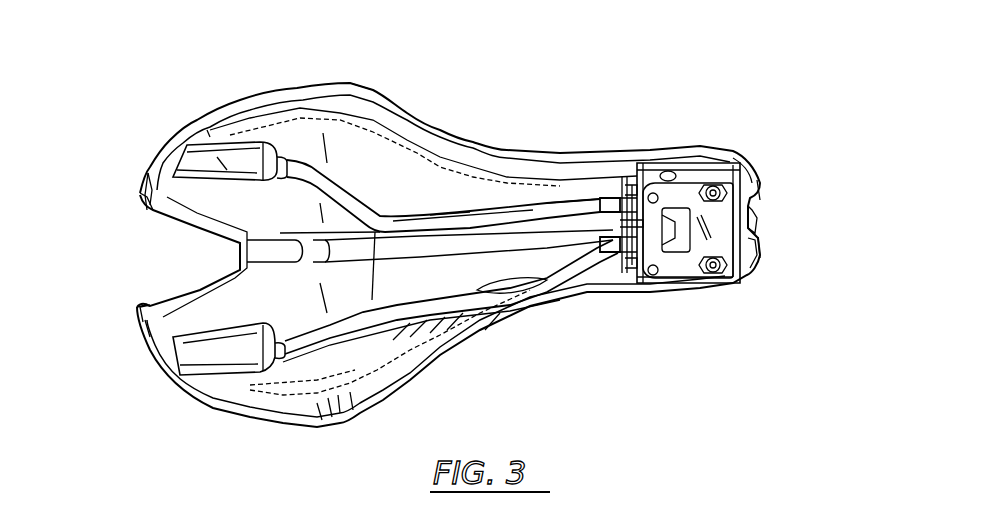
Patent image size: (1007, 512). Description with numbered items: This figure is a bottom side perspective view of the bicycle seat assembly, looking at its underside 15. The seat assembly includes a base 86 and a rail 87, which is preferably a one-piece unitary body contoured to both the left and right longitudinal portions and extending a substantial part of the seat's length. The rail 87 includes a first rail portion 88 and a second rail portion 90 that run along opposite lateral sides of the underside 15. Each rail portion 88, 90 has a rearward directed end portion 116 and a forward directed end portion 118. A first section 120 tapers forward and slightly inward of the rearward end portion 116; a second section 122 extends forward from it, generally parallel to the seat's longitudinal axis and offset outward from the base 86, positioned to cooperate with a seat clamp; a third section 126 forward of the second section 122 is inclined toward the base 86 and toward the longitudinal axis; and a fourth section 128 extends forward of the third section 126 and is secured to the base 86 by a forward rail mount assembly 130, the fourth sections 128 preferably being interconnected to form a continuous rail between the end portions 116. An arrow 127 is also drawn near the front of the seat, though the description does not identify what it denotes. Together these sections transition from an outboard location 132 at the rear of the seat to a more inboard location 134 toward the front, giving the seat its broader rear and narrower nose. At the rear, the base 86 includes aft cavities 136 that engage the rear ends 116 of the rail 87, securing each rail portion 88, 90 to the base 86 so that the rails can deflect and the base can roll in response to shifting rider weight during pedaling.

The underside 15 is at (727, 300).
The base 86 is at (393, 143).
The rail 87 is at (320, 163).
The first rail portion 88 is at (477, 310).
The second rail portion 90 is at (470, 187).
The rearward directed end portion 116 is at (283, 173).
The forward directed end portion 118 is at (613, 205).
The first section 120 is at (380, 217).
The second section 122 is at (436, 210).
The third section 126 is at (550, 200).
The forward direction 127 is at (713, 72).
The fourth section 128 is at (600, 208).
The forward rail mount assembly 130 is at (800, 90).
The outboard location 132 is at (150, 148).
The inboard location 134 is at (773, 177).
The aft cavities 136 is at (213, 157).